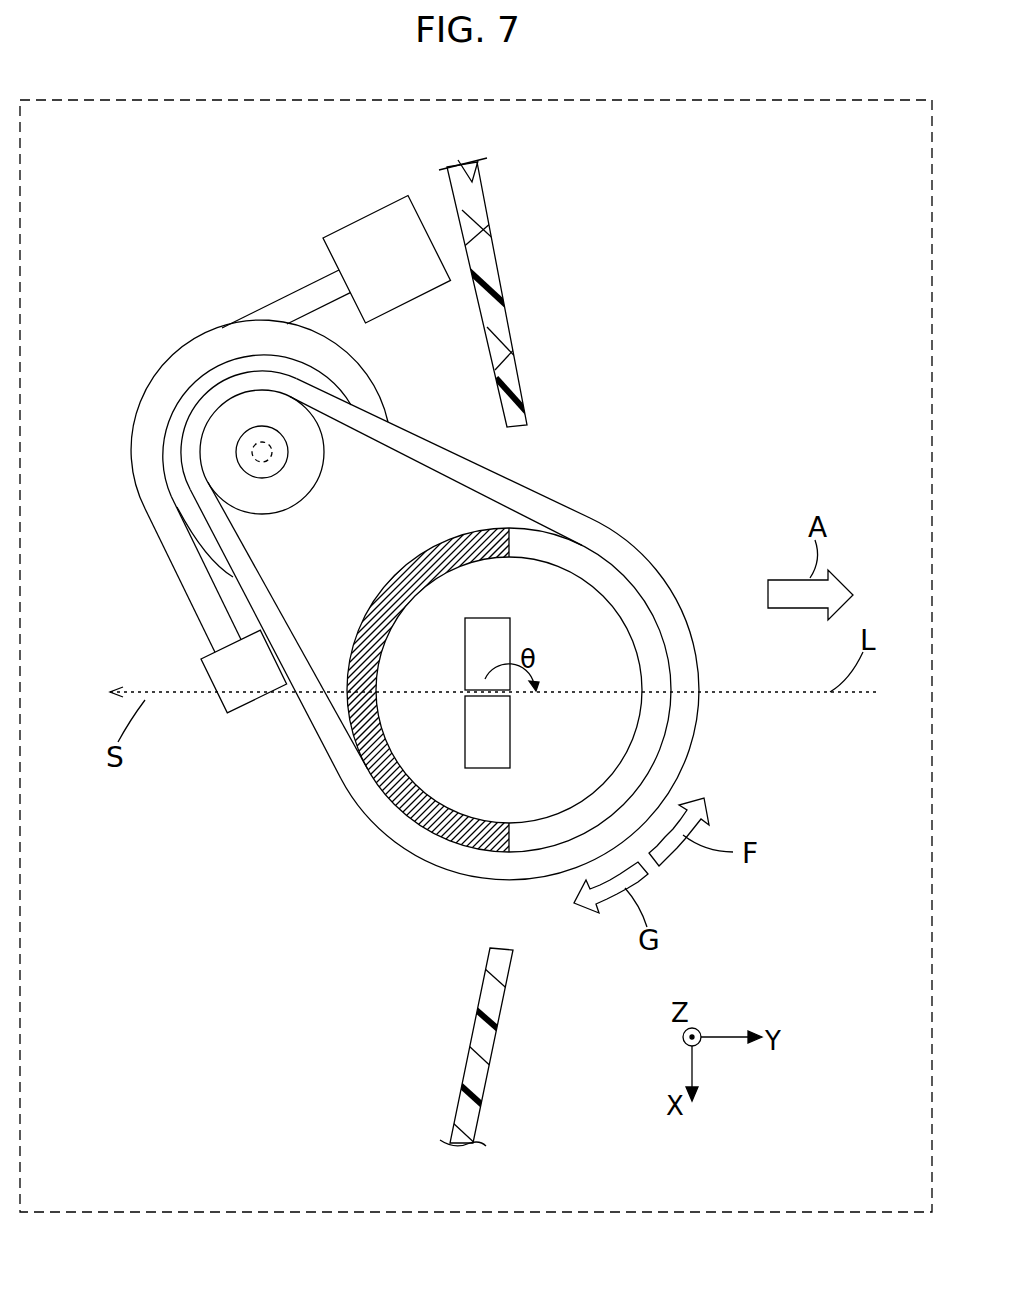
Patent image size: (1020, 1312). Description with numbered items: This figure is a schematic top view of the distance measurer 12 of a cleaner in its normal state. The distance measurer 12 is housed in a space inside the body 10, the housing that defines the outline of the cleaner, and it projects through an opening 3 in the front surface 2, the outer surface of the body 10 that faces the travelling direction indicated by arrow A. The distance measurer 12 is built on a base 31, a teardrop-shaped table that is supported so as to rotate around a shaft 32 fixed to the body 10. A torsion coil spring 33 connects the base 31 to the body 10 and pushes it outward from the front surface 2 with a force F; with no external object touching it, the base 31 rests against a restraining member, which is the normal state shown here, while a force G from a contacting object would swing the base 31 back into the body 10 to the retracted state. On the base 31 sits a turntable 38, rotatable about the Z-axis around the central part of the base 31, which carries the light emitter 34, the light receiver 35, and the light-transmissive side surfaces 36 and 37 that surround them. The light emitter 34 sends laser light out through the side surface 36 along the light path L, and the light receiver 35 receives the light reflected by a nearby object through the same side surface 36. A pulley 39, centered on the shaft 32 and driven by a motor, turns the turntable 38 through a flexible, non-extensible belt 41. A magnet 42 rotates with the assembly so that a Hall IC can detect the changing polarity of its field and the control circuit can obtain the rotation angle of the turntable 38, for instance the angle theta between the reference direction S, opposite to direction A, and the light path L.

The body 10 is at (133, 291).
The distance measurer 12 is at (731, 371).
The front surface 2 is at (498, 221).
The opening 3 is at (519, 463).
The base 31 is at (620, 537).
The shaft 32 is at (257, 455).
The spring 33 is at (262, 310).
The light emitter 34 is at (485, 730).
The light receiver 35 is at (418, 792).
The side surface 36 is at (656, 650).
The side surface 37 is at (463, 677).
The turntable 38 is at (690, 665).
The pulley 39 is at (308, 442).
The belt 41 is at (433, 467).
The magnet 42 is at (256, 469).